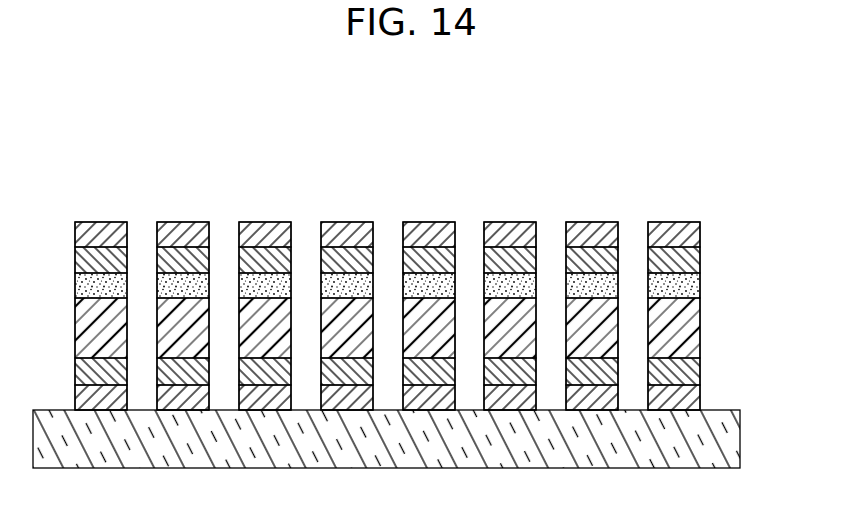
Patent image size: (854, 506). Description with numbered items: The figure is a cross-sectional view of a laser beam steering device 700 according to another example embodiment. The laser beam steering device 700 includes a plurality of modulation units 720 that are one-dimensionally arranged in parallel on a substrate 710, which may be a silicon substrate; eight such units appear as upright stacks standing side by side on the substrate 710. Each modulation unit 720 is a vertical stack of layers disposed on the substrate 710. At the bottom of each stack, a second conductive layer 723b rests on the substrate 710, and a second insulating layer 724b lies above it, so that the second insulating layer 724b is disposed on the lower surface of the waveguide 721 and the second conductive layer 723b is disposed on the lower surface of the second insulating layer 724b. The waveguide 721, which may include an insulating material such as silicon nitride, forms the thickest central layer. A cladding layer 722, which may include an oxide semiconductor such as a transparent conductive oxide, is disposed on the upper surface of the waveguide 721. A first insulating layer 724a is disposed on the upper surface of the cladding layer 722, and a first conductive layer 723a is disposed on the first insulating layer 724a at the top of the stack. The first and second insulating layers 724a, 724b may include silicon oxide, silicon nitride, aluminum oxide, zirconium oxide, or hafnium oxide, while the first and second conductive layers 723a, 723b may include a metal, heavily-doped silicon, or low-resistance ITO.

The laser beam steering device 700 is at (734, 177).
The substrate 710 is at (740, 438).
The modulation unit 720 is at (101, 212).
The waveguide 721 is at (700, 328).
The cladding layer 722 is at (700, 289).
The first conductive layer 723a is at (700, 234).
The second conductive layer 723b is at (700, 399).
The first insulating layer 724a is at (700, 262).
The second insulating layer 724b is at (700, 374).